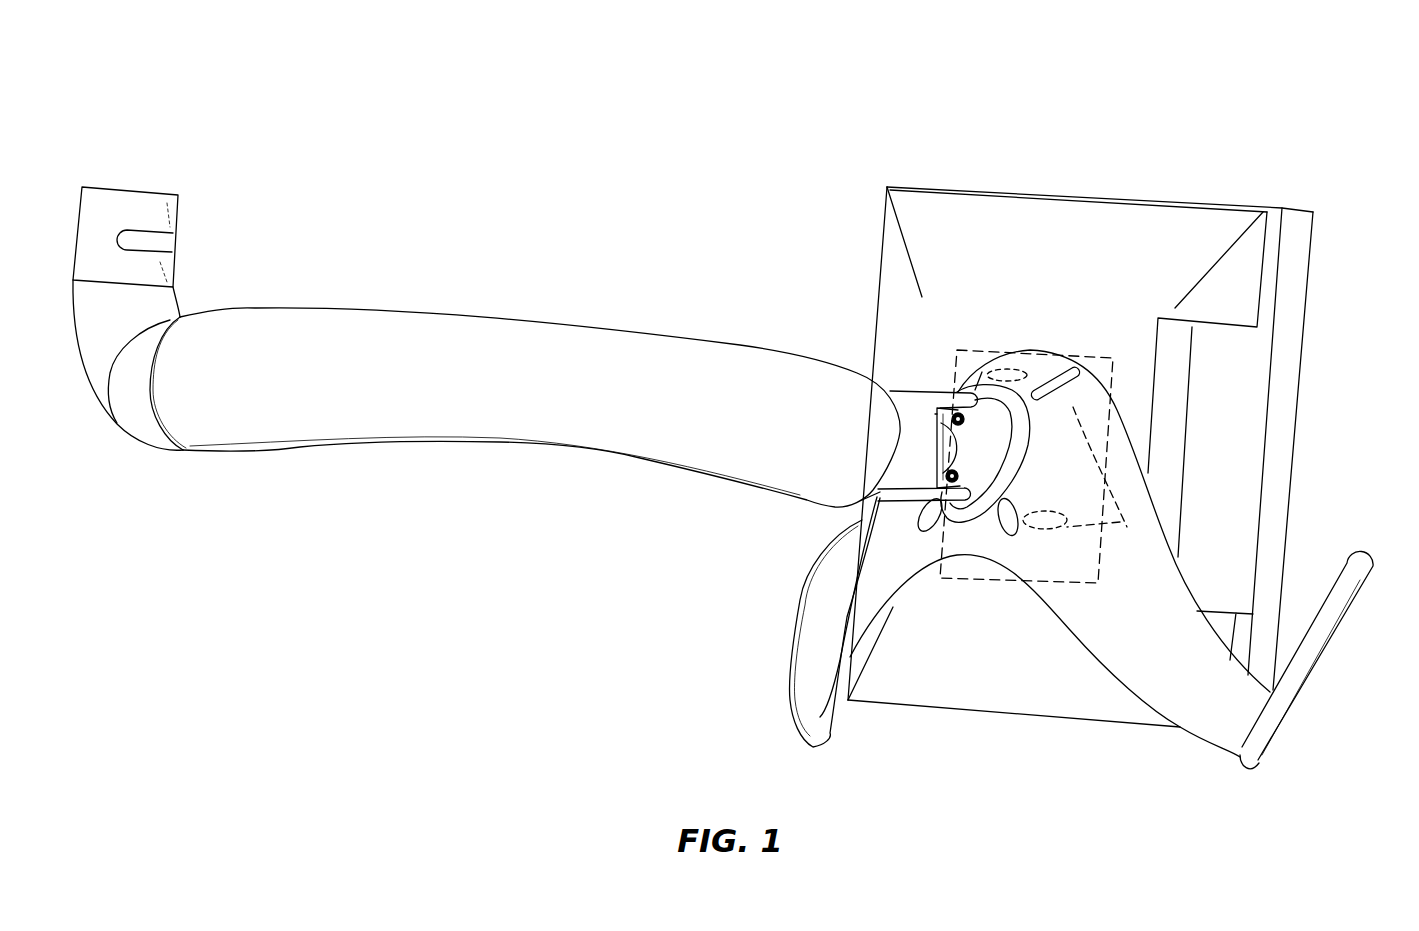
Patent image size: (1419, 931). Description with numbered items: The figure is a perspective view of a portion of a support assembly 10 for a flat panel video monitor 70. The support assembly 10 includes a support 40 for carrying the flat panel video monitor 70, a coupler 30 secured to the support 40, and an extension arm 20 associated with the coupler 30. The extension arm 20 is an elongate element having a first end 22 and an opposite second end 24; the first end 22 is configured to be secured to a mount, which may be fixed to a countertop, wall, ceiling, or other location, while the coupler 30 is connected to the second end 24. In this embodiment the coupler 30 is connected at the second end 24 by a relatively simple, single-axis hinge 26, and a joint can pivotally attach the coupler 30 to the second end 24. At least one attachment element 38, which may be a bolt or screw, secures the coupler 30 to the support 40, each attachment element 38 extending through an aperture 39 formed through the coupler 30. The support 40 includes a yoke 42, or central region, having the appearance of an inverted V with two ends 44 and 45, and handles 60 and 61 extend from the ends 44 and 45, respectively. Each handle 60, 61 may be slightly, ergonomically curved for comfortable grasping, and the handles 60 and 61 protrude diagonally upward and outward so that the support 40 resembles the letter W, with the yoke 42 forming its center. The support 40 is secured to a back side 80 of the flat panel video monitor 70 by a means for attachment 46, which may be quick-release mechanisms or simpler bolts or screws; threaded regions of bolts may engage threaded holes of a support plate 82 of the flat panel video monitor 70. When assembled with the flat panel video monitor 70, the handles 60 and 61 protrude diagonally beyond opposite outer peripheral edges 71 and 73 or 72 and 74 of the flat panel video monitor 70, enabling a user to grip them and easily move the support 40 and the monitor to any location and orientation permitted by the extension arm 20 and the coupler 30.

The support assembly 10 is at (507, 166).
The extension arm 20 is at (492, 412).
The first end 22 is at (160, 216).
The second end 24 is at (897, 387).
The hinge 26 is at (950, 450).
The coupler 30 is at (973, 480).
The attachment element 38 is at (933, 470).
The aperture 39 is at (964, 421).
The support 40 is at (1120, 384).
The yoke 42 is at (1040, 350).
The end 44 is at (818, 700).
The end 45 is at (1237, 732).
The means for attachment 46 is at (1120, 522).
The handle 60 is at (808, 620).
The handle 61 is at (1307, 670).
The flat panel video monitor 70 is at (1019, 184).
The outer peripheral edge 71 is at (1293, 403).
The outer peripheral edge 72 is at (1227, 207).
The outer peripheral edge 73 is at (877, 293).
The outer peripheral edge 74 is at (1087, 722).
The back side 80 is at (1123, 267).
The support plate 82 is at (1115, 440).